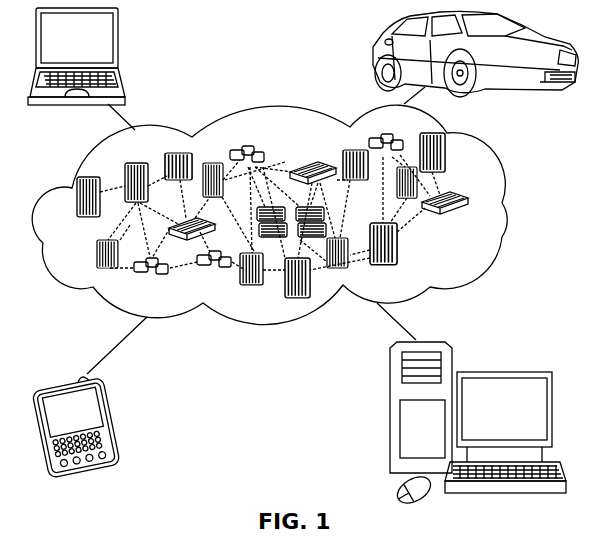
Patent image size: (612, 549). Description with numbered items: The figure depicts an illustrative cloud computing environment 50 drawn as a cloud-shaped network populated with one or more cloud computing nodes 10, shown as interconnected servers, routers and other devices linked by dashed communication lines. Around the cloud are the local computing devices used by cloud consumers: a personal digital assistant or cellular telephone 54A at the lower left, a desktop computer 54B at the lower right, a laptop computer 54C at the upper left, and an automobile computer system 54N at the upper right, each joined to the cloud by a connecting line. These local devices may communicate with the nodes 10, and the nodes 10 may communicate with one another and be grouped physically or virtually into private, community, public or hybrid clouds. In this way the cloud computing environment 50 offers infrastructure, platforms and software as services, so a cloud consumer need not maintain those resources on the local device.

The cloud computing nodes 10 is at (472, 222).
The cloud computing environment 50 is at (503, 203).
The personal digital assistant (PDA) or cellular telephone 54A is at (110, 427).
The desktop computer 54B is at (500, 372).
The laptop computer 54C is at (120, 43).
The automobile computer system 54N is at (375, 50).